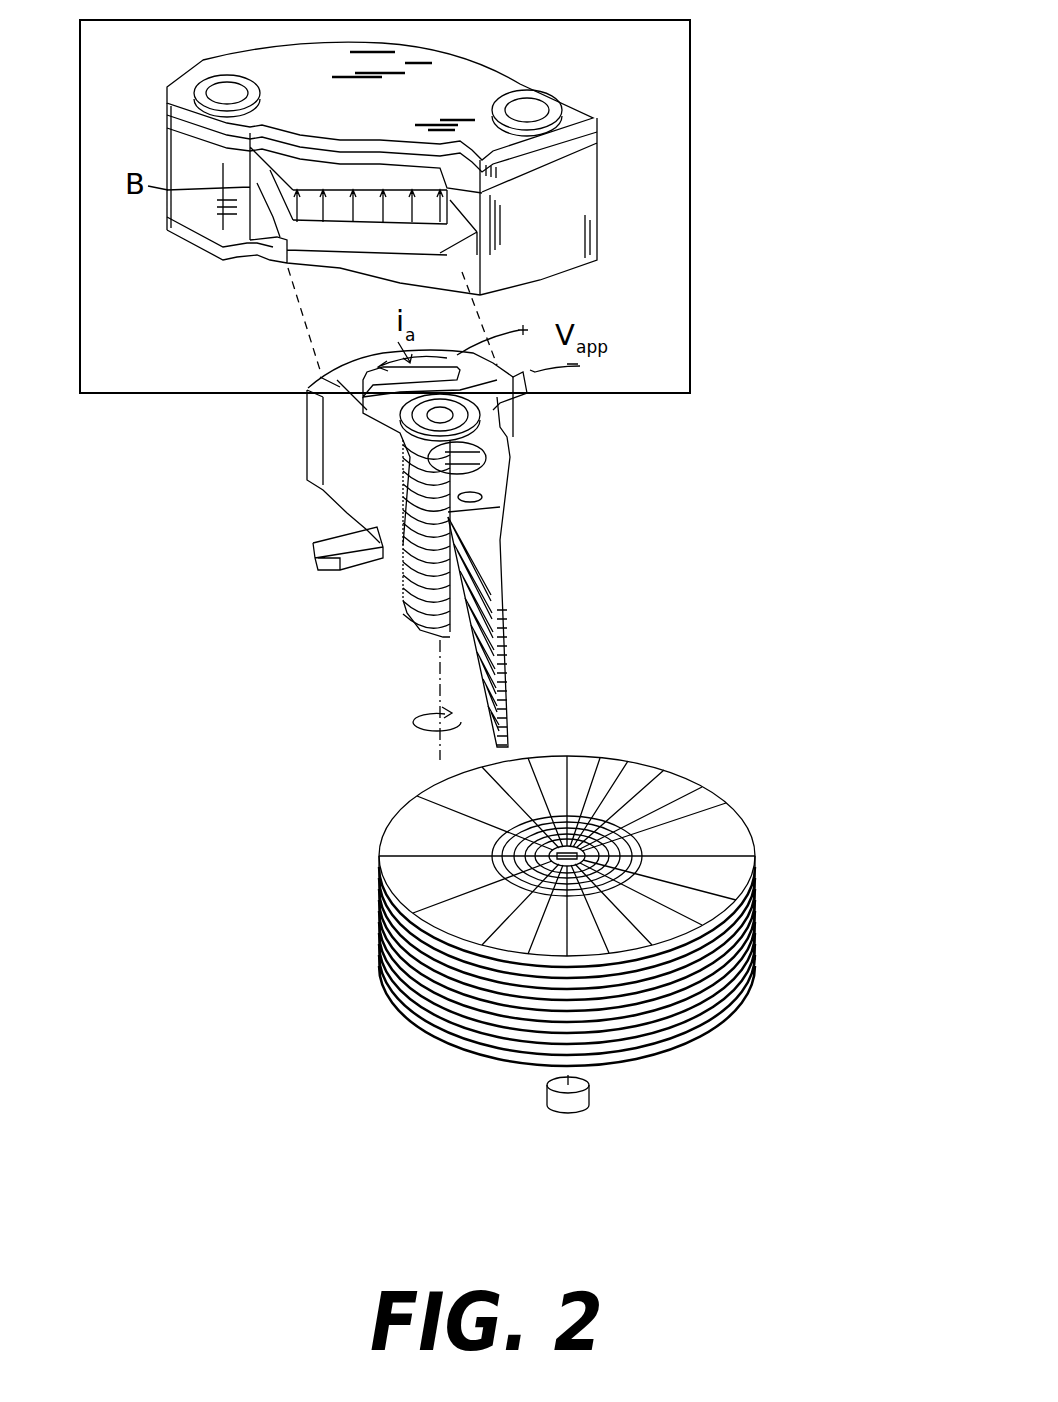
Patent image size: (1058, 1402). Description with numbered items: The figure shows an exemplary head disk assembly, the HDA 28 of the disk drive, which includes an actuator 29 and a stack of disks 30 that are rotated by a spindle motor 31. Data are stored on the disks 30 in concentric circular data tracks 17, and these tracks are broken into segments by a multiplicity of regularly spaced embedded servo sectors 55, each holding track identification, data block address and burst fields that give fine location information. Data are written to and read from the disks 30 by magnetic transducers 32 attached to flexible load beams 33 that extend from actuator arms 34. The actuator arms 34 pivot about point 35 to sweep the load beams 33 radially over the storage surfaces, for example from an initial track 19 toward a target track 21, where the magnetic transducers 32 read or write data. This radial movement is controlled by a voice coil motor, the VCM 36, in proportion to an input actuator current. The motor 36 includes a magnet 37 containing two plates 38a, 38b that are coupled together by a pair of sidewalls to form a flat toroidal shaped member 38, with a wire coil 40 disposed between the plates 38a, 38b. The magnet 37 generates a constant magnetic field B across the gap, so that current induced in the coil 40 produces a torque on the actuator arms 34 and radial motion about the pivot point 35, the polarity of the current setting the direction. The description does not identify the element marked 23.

The data tracks 17 is at (590, 812).
The initial track 19 is at (640, 827).
The target track 21 is at (647, 860).
The track 23 is at (603, 817).
The head disk assembly 28 is at (667, 491).
The actuator 29 is at (152, 483).
The disks 30 is at (660, 1058).
The spindle motor 31 is at (548, 1094).
The magnetic transducers 32 is at (500, 610).
The flexible load beams 33 is at (500, 550).
The actuator arms 34 is at (500, 468).
The pivot point 35 is at (480, 410).
The voice coil motor 36 is at (690, 188).
The magnet 37 is at (490, 50).
The flat toroidal shaped member 38 is at (583, 193).
The plate 38a is at (340, 165).
The plate 38b is at (333, 242).
The wire coil 40 is at (345, 360).
The servo sectors 55 is at (398, 865).